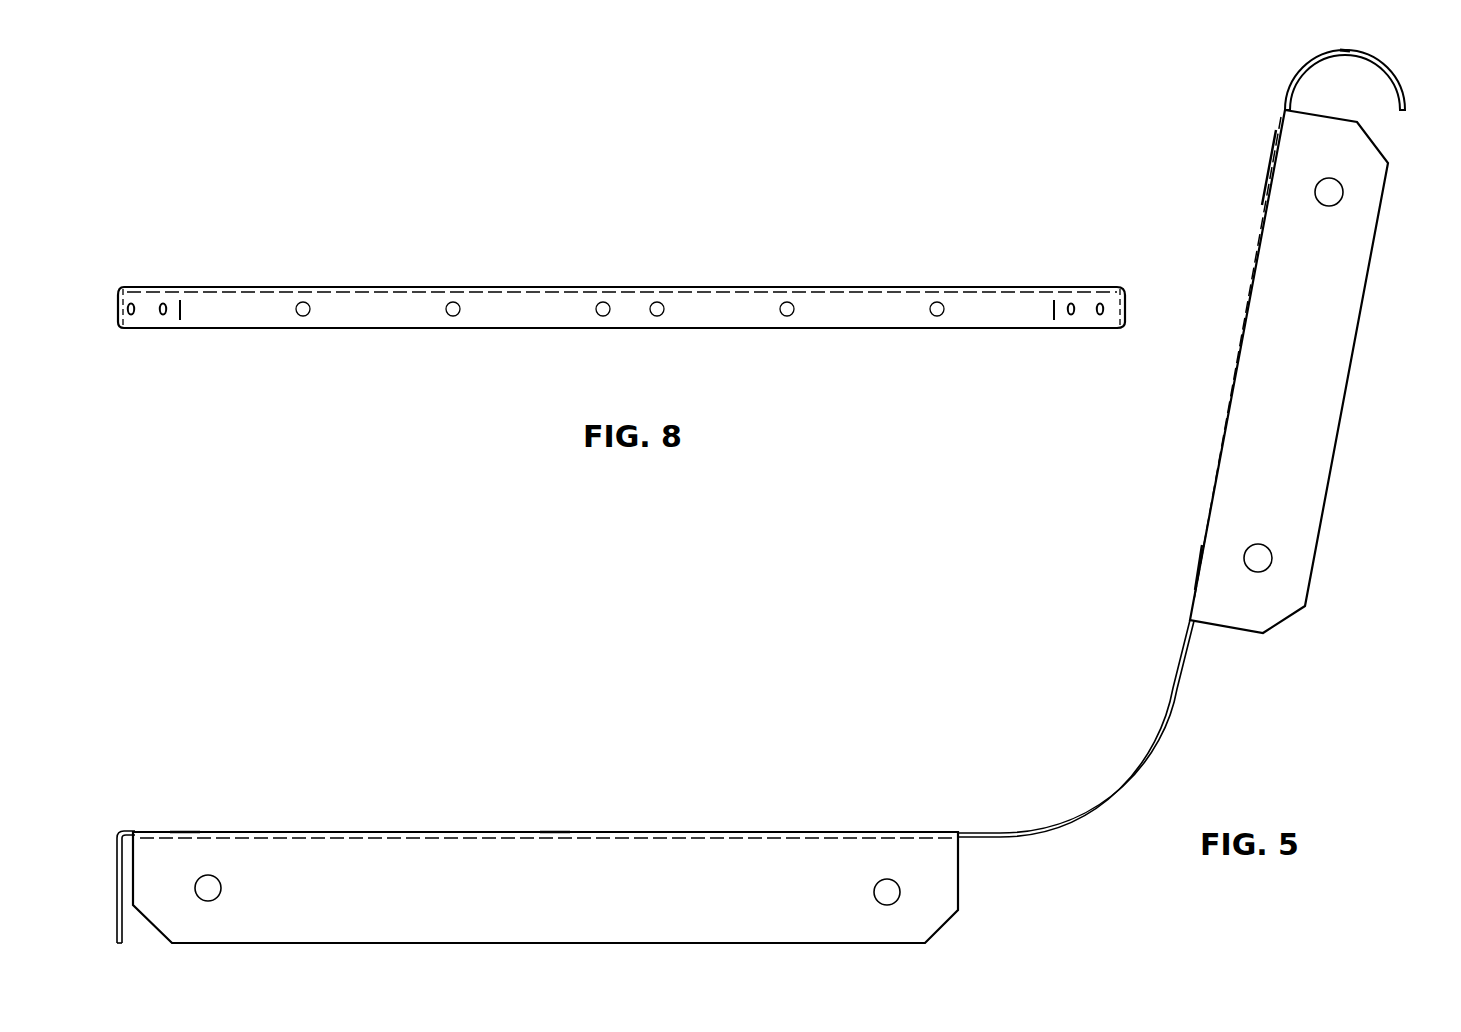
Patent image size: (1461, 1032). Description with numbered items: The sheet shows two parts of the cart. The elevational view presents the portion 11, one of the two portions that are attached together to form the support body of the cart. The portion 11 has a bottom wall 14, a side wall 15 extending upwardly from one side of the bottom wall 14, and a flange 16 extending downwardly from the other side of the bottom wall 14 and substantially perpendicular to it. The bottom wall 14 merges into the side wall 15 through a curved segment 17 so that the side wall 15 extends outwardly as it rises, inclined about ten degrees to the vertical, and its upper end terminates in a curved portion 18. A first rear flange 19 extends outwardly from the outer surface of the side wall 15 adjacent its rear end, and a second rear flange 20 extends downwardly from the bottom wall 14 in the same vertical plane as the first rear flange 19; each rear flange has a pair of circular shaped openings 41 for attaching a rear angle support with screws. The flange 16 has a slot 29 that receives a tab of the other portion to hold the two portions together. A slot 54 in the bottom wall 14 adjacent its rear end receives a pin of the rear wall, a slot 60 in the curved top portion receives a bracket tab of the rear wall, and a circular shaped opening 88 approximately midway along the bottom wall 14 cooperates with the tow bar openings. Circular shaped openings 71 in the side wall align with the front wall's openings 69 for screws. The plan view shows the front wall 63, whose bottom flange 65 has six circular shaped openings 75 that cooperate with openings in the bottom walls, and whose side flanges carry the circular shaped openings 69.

In FIG. 5, the portion 11 is at (822, 830).
In FIG. 5, the bottom wall 14 is at (710, 840).
In FIG. 5, the side wall 15 is at (1238, 378).
In FIG. 5, the flange 16 is at (120, 940).
In FIG. 5, the curved segment 17 is at (1163, 726).
In FIG. 5, the curved portion 18 is at (1402, 80).
In FIG. 5, the first rear flange 19 is at (1350, 385).
In FIG. 5, the second rear flange 20 is at (648, 943).
In FIG. 5, the slot 29 is at (115, 889).
In FIG. 5, the circular shaped openings 41 is at (1335, 202).
In FIG. 5, the slot 54 is at (564, 832).
In FIG. 5, the slot 60 is at (1348, 48).
In FIG. 8, the front wall 63 is at (763, 290).
In FIG. 8, the bottom flange 65 is at (875, 330).
In FIG. 8, the circular shaped openings 69 is at (134, 313).
In FIG. 5, the circular shaped openings 71 is at (1270, 179).
In FIG. 8, the circular shaped openings 75 is at (305, 316).
In FIG. 5, the circular shaped opening 88 is at (190, 832).